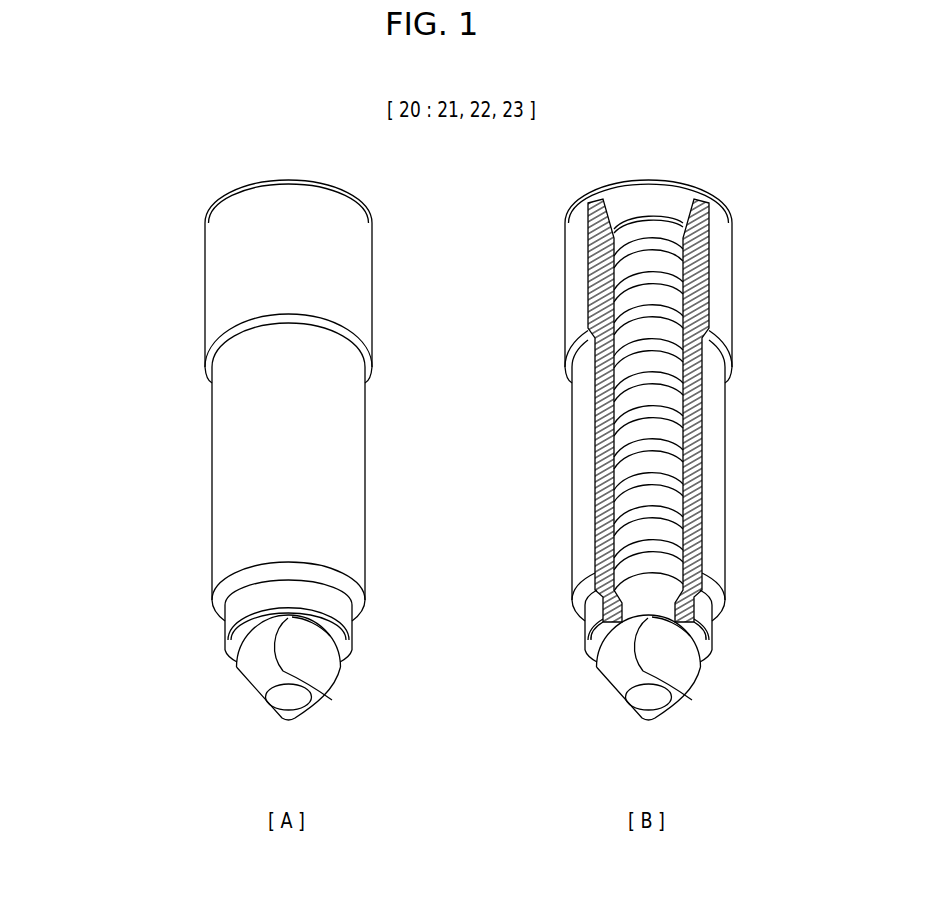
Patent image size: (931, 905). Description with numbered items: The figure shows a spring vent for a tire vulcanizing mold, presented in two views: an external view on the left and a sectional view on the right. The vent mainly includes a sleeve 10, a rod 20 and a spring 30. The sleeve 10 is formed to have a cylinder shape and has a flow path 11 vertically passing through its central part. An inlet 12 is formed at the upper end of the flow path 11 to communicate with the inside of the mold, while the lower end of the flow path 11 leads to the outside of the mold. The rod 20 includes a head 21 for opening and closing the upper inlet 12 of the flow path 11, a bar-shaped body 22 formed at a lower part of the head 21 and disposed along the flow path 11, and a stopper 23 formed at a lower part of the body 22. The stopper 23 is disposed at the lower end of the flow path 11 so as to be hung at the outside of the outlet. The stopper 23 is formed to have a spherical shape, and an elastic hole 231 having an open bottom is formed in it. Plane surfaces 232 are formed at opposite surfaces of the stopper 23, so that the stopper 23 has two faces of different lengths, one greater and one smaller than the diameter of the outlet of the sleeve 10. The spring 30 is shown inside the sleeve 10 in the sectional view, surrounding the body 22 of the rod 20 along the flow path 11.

The sleeve 10 is at (185, 378).
The flow path 11 is at (617, 308).
The inlet 12 is at (610, 218).
The rod 20 is at (688, 172).
The head 21 is at (633, 192).
The body 22 is at (665, 390).
The stopper 23 is at (243, 677).
The elastic hole 231 is at (292, 697).
The plane surfaces 232 is at (315, 667).
The spring 30 is at (632, 502).